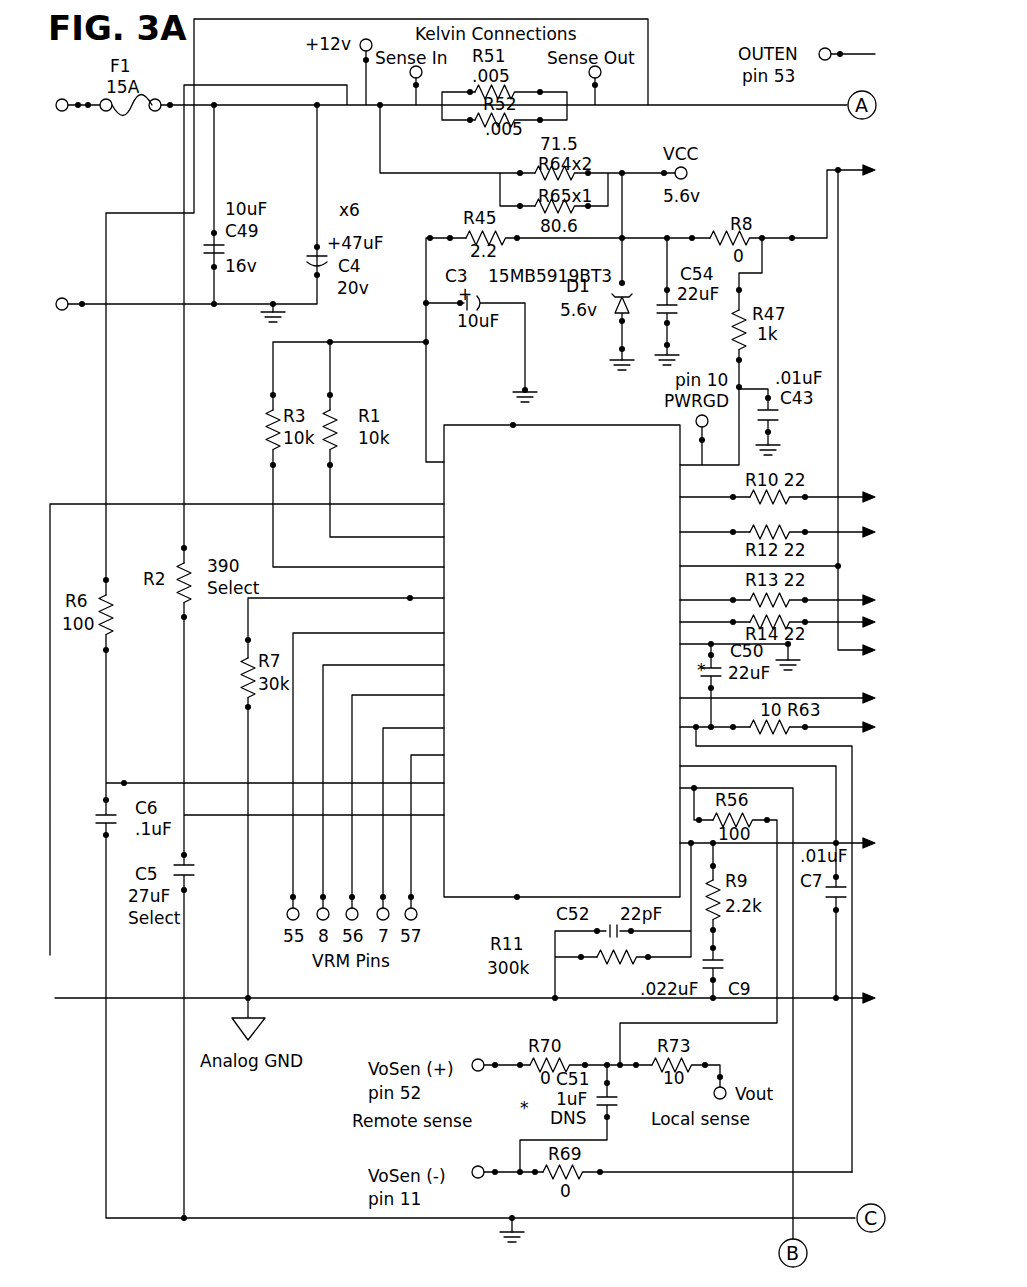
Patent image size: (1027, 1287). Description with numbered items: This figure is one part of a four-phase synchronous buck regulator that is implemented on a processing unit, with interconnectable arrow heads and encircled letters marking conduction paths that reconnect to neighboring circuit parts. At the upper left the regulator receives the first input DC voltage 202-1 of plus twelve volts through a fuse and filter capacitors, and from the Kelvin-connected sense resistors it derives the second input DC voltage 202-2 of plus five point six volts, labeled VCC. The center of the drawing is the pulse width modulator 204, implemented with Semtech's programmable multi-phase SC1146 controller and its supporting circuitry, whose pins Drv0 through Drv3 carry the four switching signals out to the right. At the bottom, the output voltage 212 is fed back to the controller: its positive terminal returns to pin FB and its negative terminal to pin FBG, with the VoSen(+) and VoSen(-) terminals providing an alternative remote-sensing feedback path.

The input DC voltage 202-1 is at (49, 307).
The input DC voltage 202-2 is at (689, 169).
The pulse width modulator 204 is at (444, 897).
The output voltage 212 is at (668, 1170).